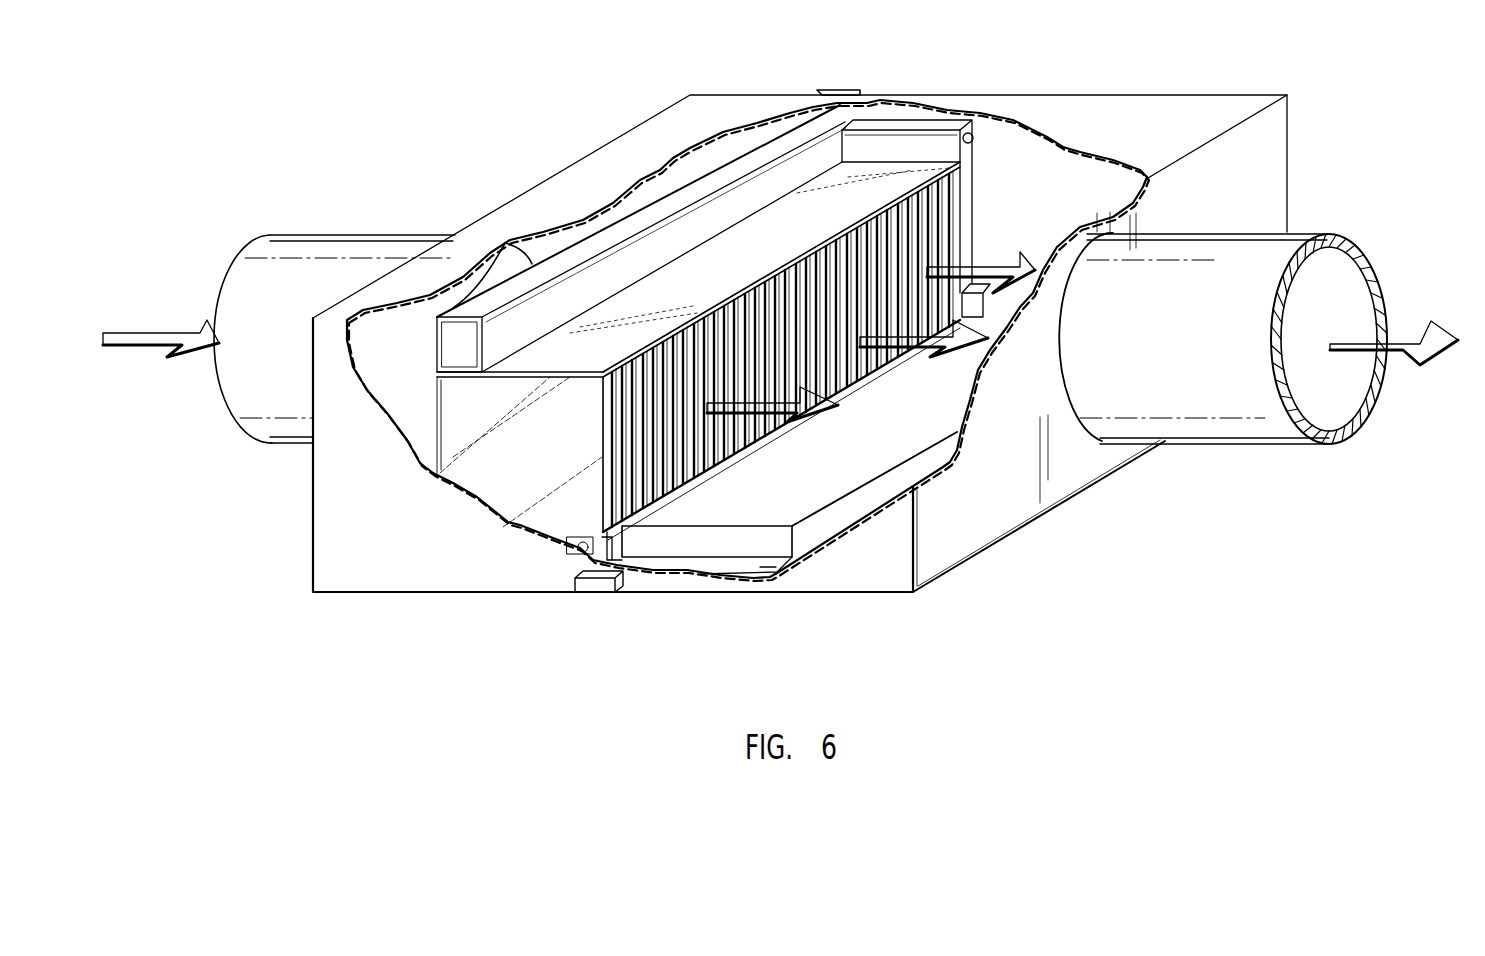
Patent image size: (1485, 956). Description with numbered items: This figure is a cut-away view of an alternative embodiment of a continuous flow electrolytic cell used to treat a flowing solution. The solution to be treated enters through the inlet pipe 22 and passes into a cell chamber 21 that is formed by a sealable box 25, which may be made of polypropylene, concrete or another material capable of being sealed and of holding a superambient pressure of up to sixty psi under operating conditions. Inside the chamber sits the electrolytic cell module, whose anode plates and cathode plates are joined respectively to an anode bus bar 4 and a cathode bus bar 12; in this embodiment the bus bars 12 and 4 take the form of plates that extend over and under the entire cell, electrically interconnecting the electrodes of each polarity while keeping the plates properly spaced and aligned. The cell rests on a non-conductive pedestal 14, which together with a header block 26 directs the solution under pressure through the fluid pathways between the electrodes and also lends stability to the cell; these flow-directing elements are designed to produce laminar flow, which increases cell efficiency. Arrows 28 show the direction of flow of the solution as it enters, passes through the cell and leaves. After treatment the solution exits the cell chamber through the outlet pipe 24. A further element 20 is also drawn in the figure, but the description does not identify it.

The anode bus bar 4 is at (713, 467).
The cathode bus bar 12 is at (775, 225).
The non-conductive pedestal 14 is at (880, 447).
The guide rail 20 is at (697, 225).
The cell chamber 21 is at (393, 378).
The inlet pipe 22 is at (352, 253).
The outlet pipe 24 is at (1223, 277).
The sealable box 25 is at (438, 557).
The header block 26 is at (840, 88).
The arrows 28 is at (150, 340).